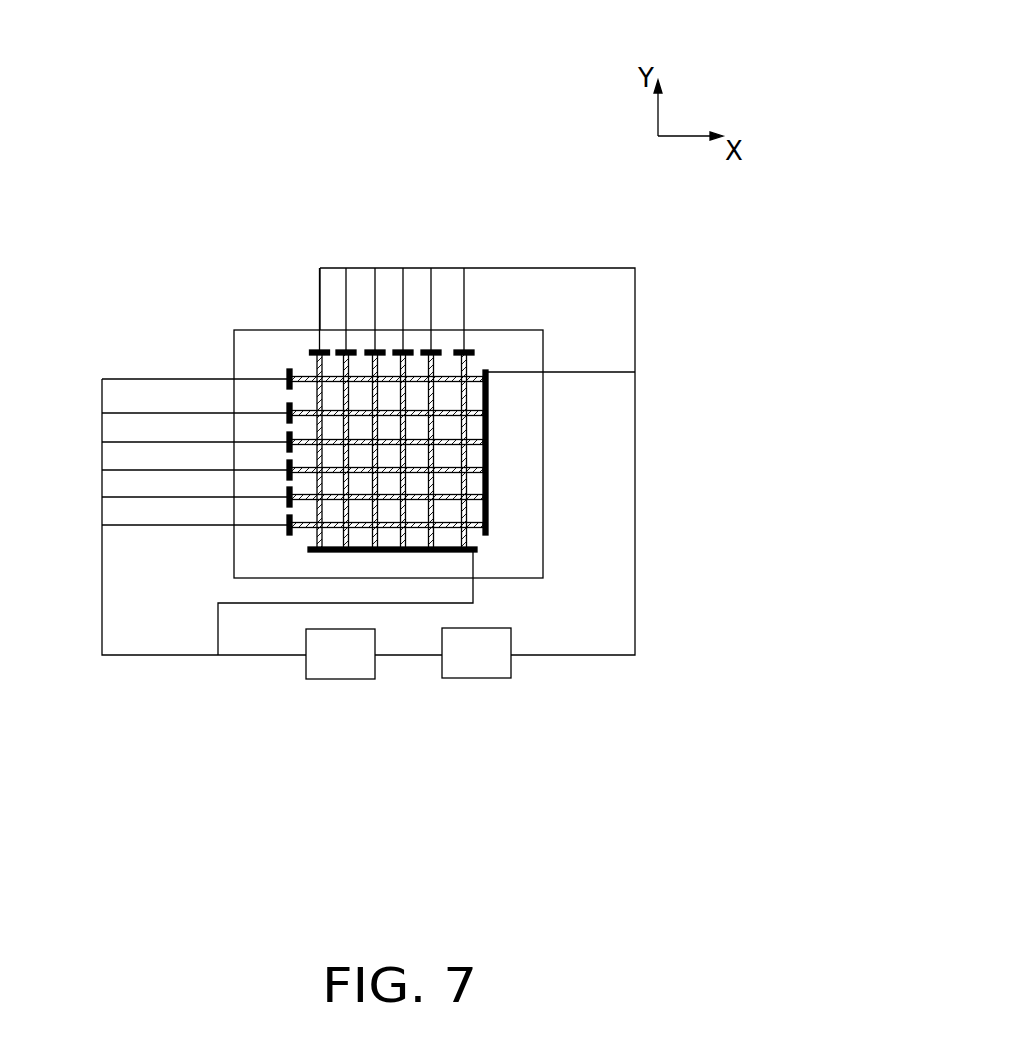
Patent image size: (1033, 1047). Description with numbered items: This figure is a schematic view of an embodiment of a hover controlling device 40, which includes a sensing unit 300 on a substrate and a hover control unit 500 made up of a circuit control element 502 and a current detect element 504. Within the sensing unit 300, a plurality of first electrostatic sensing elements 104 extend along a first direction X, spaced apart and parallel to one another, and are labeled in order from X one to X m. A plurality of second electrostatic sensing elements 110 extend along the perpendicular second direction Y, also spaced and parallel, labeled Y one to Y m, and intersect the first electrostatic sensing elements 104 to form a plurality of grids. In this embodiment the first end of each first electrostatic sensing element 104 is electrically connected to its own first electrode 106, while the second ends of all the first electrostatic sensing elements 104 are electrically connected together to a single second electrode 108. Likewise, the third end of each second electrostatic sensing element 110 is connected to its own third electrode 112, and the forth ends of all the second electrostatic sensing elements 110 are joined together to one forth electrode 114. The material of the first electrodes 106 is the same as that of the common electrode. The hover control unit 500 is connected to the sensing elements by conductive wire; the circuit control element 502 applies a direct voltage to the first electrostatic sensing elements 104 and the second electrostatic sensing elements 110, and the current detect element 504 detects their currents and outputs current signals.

The hover controlling device 40 is at (442, 84).
The sensing unit 300 is at (297, 207).
The first electrostatic sensing elements 104 is at (303, 377).
The first electrodes 106 is at (287, 372).
The second electrostatic sensing elements 110 is at (317, 360).
The third electrodes 112 is at (317, 352).
The second electrode 108 is at (486, 370).
The forth electrode 114 is at (477, 550).
The hover control unit 500 is at (597, 739).
The circuit control element 502 is at (348, 679).
The current detect element 504 is at (480, 677).